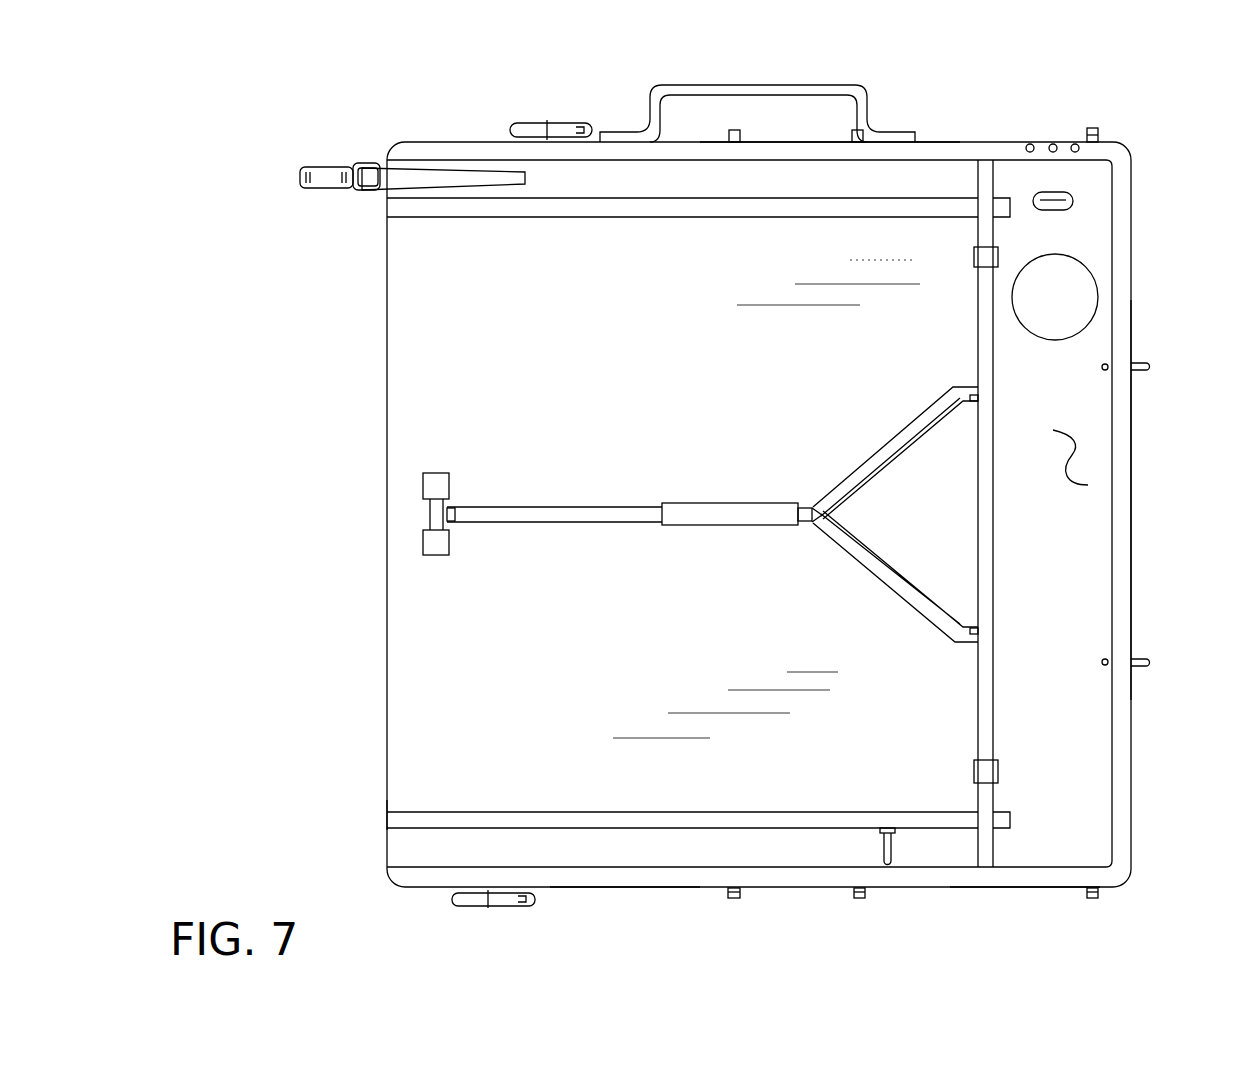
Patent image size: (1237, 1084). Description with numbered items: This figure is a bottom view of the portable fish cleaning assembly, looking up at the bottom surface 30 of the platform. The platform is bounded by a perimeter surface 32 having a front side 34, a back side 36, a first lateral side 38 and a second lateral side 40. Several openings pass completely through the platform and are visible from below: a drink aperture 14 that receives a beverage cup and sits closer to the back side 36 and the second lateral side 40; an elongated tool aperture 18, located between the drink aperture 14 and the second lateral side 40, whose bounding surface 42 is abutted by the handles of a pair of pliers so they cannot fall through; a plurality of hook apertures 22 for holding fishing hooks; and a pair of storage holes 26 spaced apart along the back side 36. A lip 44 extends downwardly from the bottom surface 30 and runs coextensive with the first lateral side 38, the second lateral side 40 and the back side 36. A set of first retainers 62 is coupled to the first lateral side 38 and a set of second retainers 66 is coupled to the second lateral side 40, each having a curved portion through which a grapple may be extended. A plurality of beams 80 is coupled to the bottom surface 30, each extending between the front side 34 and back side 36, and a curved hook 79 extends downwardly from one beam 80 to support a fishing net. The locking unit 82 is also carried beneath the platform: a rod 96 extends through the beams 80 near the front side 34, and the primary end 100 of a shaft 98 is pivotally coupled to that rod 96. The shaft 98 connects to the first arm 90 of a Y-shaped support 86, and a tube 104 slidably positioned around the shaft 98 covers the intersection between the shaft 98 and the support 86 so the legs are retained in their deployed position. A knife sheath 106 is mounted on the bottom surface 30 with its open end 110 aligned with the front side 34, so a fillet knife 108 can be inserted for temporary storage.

The drink aperture 14 is at (1062, 320).
The tool aperture 18 is at (1066, 195).
The hook apertures 22 is at (1075, 146).
The storage holes 26 is at (1103, 367).
The bottom surface 30 is at (1085, 455).
The perimeter surface 32 is at (1027, 885).
The front side 34 is at (1128, 760).
The back side 36 is at (384, 688).
The first lateral side 38 is at (625, 888).
The second lateral side 40 is at (948, 140).
The bounding surface 42 is at (1034, 210).
The lip 44 is at (440, 875).
The first retainers 62 is at (732, 900).
The second retainers 66 is at (733, 130).
The hook 79 is at (890, 848).
The beams 80 is at (570, 198).
The locking unit 82 is at (616, 482).
The support 86 is at (890, 447).
The first arm 90 is at (812, 497).
The rod 96 is at (997, 793).
The shaft 98 is at (390, 533).
The primary end 100 is at (445, 512).
The tube 104 is at (716, 515).
The knife sheath 106 is at (430, 172).
The fillet knife 108 is at (320, 167).
The open end 110 is at (365, 183).